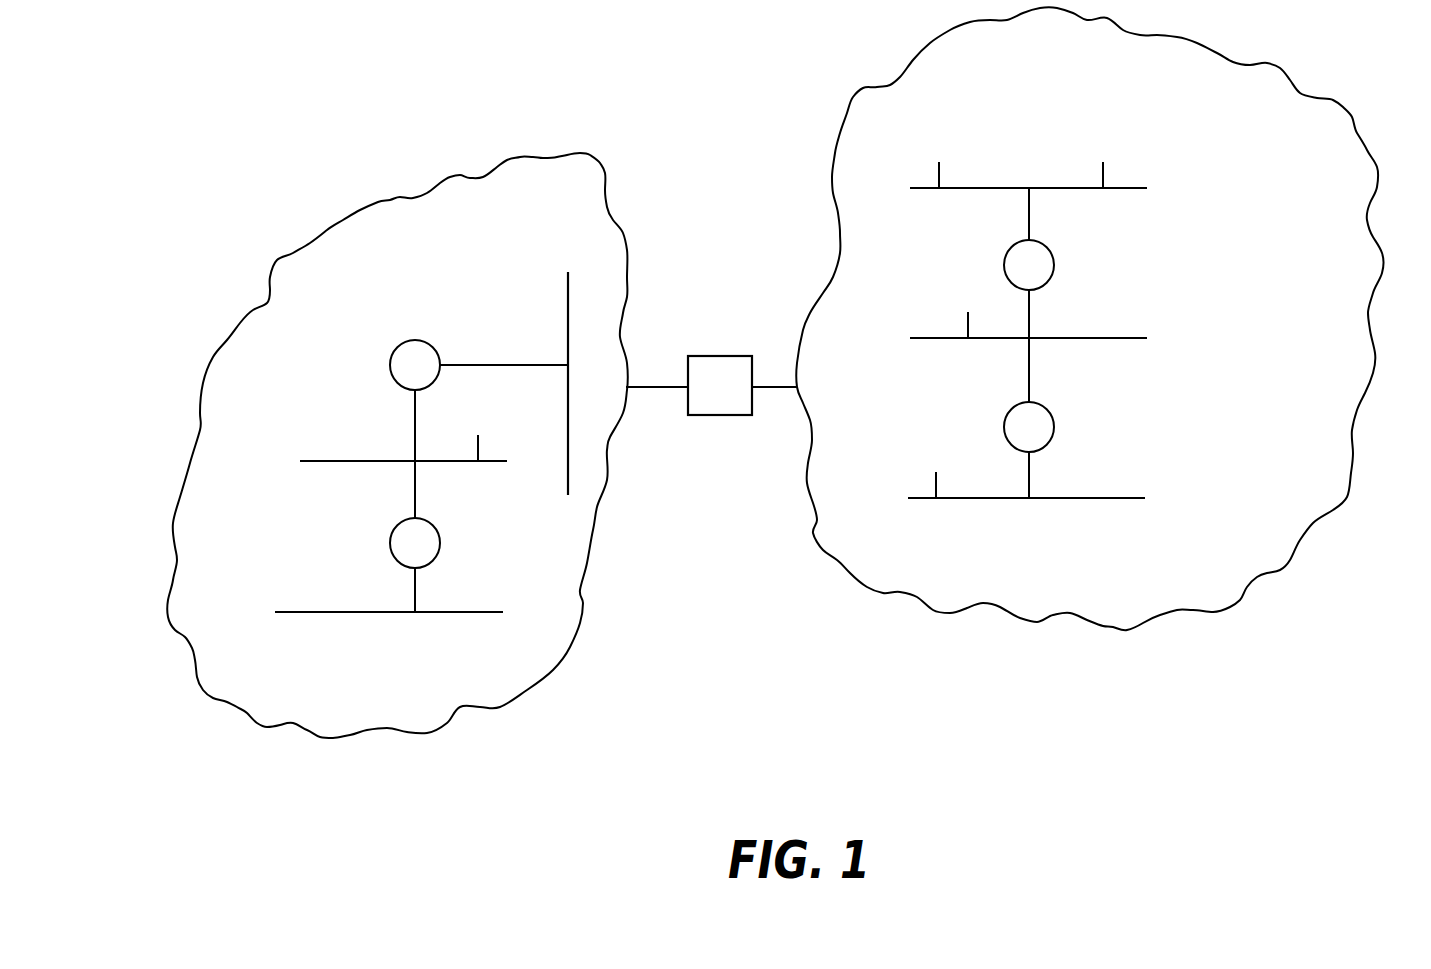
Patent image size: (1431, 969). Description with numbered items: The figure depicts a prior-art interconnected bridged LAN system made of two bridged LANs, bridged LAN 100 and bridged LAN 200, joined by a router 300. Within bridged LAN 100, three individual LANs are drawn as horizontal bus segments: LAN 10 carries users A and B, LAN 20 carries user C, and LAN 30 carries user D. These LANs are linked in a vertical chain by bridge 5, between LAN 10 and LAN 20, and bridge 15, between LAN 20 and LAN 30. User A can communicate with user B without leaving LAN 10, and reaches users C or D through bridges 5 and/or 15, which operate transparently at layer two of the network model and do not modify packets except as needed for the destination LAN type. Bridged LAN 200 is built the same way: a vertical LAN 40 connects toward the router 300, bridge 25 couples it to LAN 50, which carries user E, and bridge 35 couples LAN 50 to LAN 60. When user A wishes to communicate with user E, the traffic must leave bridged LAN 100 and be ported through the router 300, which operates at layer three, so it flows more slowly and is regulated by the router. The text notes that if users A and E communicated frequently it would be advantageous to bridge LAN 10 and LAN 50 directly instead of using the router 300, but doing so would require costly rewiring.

The bridged LAN 100 is at (1352, 117).
The bridged LAN 200 is at (378, 202).
The router 300 is at (720, 356).
The LAN 10 is at (1138, 188).
The LAN 20 is at (1140, 338).
The LAN 30 is at (1122, 498).
The bridge 5 is at (1052, 257).
The bridge 15 is at (1052, 420).
The bridge 25 is at (407, 343).
The bridge 35 is at (440, 543).
The LAN 40 is at (568, 292).
The LAN 50 is at (322, 461).
The LAN 60 is at (297, 612).